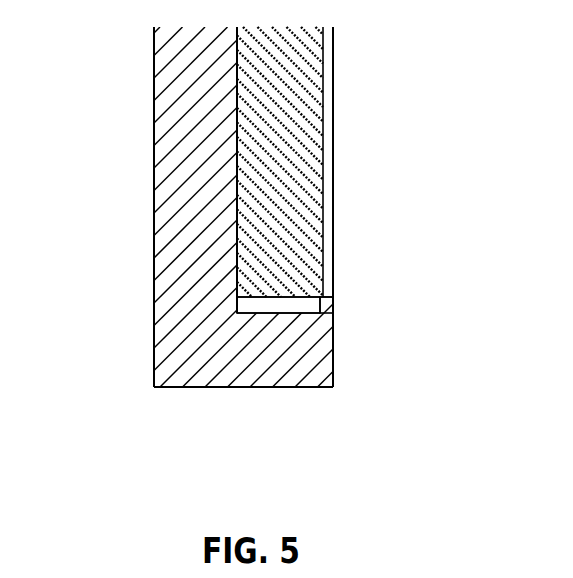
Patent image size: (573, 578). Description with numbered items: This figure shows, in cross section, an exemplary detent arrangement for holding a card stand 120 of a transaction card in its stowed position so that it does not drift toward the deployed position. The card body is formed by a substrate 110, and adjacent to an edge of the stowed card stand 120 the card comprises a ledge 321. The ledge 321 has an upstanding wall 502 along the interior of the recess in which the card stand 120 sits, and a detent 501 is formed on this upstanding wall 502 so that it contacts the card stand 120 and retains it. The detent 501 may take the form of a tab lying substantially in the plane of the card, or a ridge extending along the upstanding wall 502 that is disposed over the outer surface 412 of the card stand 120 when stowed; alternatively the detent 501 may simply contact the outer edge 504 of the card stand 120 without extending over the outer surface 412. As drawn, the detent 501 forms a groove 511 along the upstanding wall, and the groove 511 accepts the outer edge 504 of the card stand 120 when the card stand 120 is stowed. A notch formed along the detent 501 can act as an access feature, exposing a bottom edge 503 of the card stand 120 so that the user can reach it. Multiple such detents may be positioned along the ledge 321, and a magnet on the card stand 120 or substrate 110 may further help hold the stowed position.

The substrate 110 is at (154, 210).
The card stand 120 is at (300, 68).
The outer surface 412 is at (323, 127).
The outer edge 504 is at (323, 298).
The detent 501 is at (328, 306).
The bottom edge 503 is at (290, 298).
The upstanding wall 502 is at (293, 317).
The groove 511 is at (273, 312).
The ledge 321 is at (283, 380).